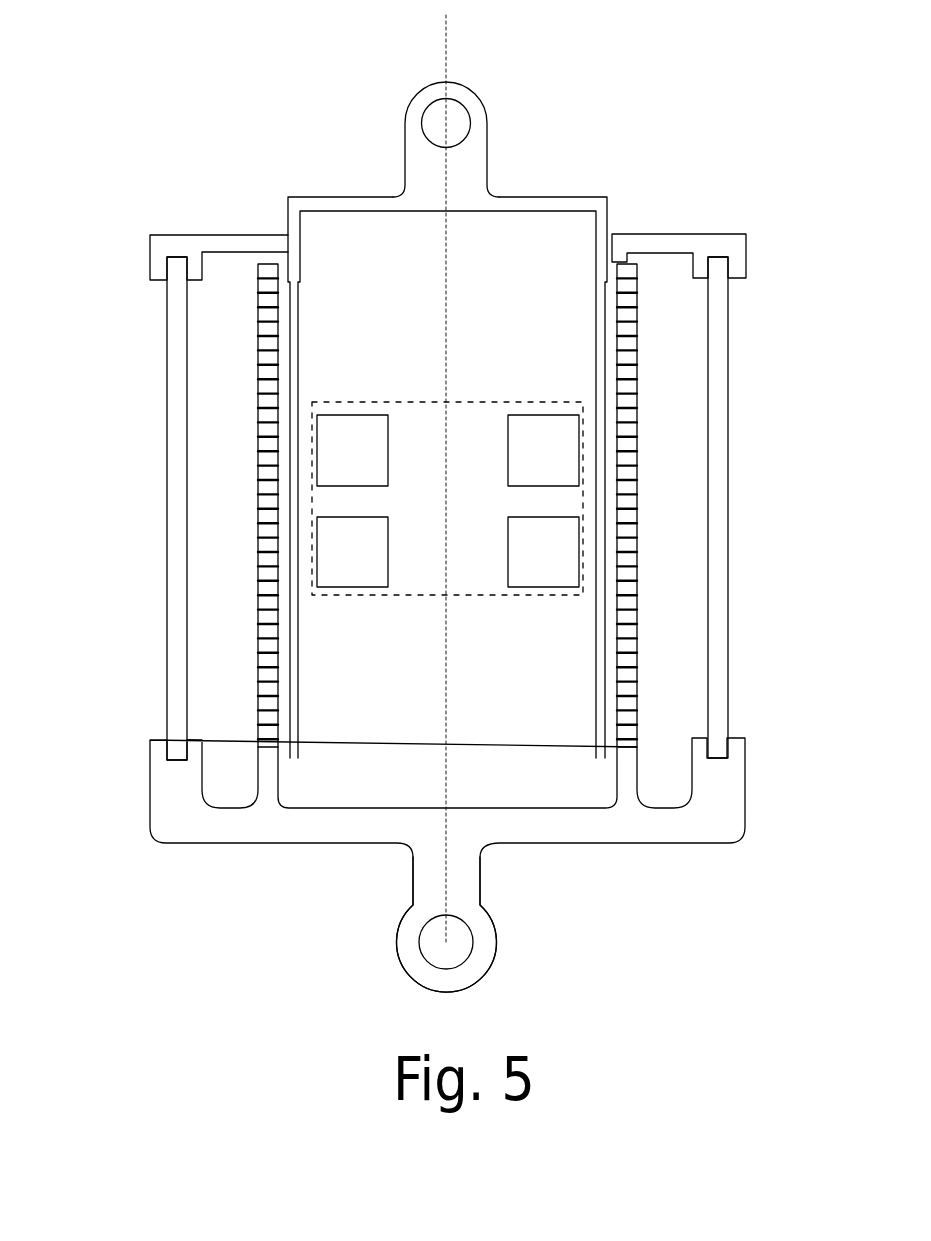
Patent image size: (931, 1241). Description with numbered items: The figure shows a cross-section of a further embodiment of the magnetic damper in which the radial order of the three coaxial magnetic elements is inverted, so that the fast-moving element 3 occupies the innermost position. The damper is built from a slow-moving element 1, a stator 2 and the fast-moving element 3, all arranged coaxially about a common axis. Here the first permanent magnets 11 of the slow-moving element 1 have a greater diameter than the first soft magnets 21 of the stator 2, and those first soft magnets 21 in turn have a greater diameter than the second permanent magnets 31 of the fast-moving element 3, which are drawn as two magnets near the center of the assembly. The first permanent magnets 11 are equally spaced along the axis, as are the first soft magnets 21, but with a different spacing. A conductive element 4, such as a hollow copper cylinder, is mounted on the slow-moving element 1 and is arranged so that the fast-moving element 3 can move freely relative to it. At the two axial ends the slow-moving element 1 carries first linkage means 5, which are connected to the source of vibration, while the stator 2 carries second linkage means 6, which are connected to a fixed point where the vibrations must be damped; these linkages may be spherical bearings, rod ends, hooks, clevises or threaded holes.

The slow-moving element 1 is at (315, 842).
The first permanent magnets 11 is at (642, 747).
The stator 2 is at (332, 182).
The first soft magnets 21 is at (280, 273).
The fast-moving element 3 is at (579, 387).
The second permanent magnets 31 is at (579, 544).
The conductive element 4 is at (165, 449).
The first linkage means 5 is at (496, 970).
The second linkage means 6 is at (492, 81).